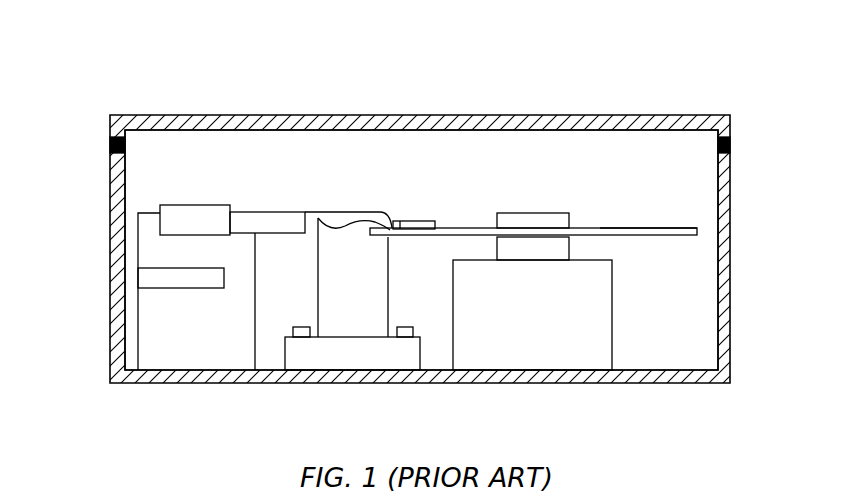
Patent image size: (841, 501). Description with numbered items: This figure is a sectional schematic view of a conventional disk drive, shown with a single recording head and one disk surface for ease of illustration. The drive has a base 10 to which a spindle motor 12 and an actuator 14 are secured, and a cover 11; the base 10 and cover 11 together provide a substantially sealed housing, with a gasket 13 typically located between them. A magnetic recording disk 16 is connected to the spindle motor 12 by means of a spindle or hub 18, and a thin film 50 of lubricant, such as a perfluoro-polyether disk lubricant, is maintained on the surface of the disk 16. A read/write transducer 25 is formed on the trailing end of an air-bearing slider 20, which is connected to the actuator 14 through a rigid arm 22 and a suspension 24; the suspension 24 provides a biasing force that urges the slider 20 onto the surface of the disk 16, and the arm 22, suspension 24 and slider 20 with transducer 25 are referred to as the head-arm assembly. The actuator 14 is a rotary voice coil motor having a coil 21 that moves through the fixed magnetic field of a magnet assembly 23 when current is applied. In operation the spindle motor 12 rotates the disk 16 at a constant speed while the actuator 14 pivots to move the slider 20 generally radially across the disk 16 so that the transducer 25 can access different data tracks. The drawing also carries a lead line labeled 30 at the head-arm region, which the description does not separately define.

The base 10 is at (697, 375).
The cover 11 is at (122, 115).
The spindle motor 12 is at (532, 358).
The gasket 13 is at (730, 143).
The actuator 14 is at (171, 358).
The magnetic recording disk 16 is at (697, 229).
The spindle or hub 18 is at (548, 213).
The air-bearing slider 20 is at (418, 221).
The coil 21 is at (160, 225).
The rigid arm 22 is at (263, 212).
The magnet assembly 23 is at (153, 277).
The suspension 24 is at (315, 218).
The read/write head or transducer 25 is at (440, 226).
The cantilever 30 is at (345, 225).
The thin film of lubricant 50 is at (668, 228).